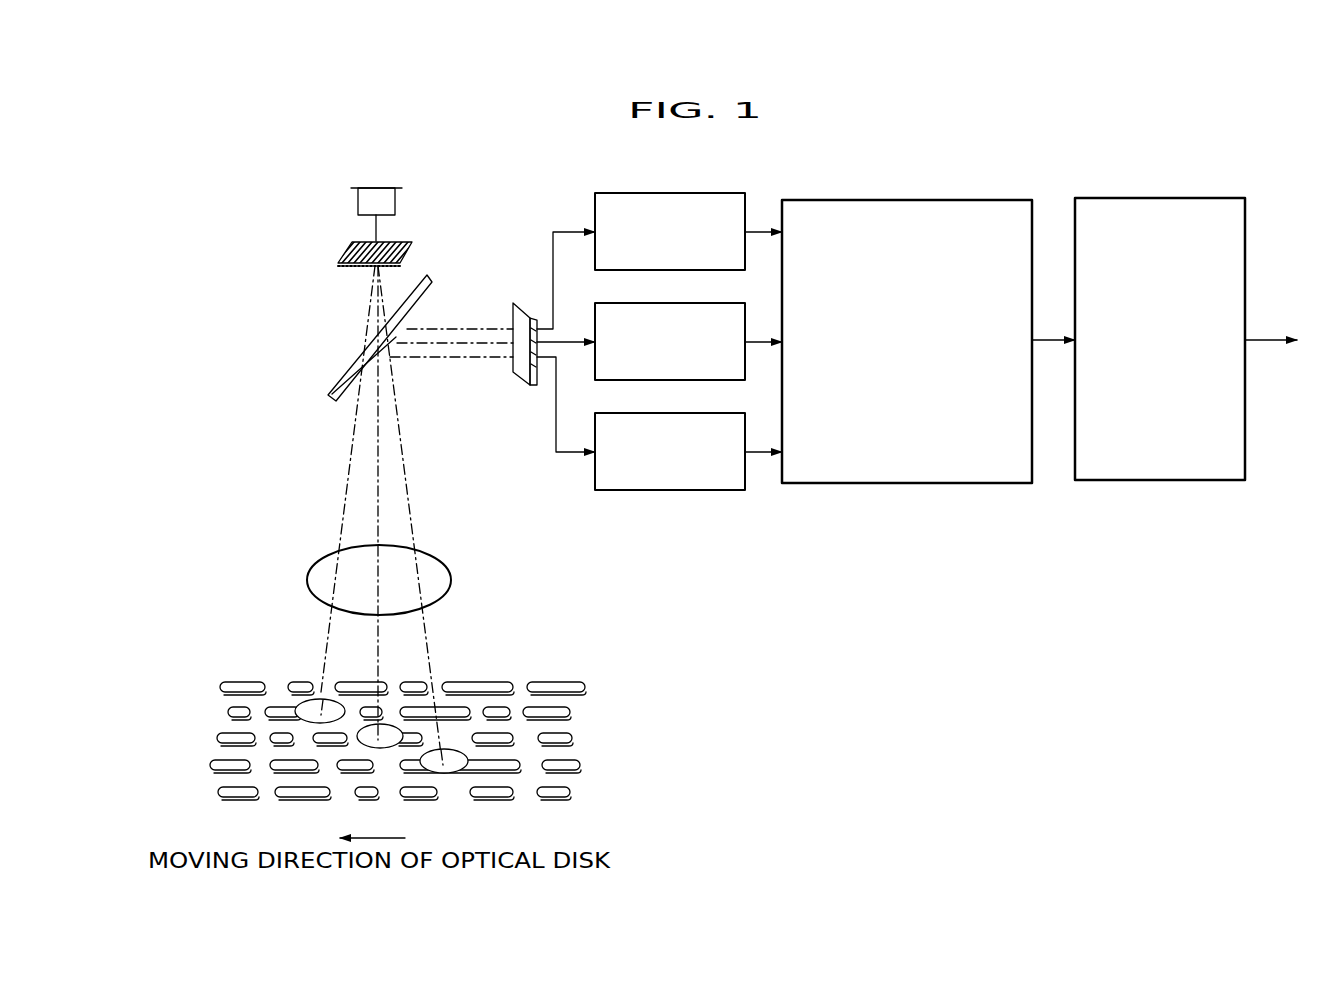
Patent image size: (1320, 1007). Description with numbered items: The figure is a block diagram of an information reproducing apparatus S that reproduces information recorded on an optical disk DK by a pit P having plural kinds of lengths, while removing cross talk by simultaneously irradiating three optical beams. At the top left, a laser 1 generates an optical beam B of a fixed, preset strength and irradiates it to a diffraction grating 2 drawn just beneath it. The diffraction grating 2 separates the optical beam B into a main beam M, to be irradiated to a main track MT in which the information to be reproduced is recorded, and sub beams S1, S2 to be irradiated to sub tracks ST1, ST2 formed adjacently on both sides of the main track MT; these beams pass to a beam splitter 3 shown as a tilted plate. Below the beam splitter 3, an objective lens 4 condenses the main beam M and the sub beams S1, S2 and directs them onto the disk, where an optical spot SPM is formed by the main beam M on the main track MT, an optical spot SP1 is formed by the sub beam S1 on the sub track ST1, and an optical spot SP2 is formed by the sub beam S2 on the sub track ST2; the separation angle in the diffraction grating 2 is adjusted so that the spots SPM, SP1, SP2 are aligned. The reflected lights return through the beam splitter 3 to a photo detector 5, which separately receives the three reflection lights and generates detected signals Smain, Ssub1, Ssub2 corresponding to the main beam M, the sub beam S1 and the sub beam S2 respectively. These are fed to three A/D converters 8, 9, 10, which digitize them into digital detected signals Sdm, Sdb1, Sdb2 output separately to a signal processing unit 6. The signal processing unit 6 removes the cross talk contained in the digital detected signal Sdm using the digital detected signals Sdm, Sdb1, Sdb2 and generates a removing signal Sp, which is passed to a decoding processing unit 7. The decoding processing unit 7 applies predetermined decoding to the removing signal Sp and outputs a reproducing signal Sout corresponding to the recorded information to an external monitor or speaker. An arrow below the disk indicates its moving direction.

The laser 1 is at (358, 202).
The optical beam B is at (373, 228).
The diffraction grating 2 is at (340, 262).
The beam splitter 3 is at (353, 357).
The objective lens 4 is at (452, 578).
The photo detector 5 is at (522, 378).
The signal processing unit 6 is at (907, 485).
The decoding processing unit 7 is at (1147, 482).
The A/D converter 8 is at (622, 193).
The A/D converter 9 is at (622, 303).
The A/D converter 10 is at (613, 492).
The main beam M is at (377, 490).
The sub beam S1 is at (413, 523).
The sub beam S2 is at (342, 522).
The optical spot SP1 is at (440, 773).
The optical spot SP2 is at (302, 705).
The optical spot SPM is at (390, 727).
The optical disk DK is at (218, 712).
The pit P is at (553, 680).
The sub track ST1 is at (590, 752).
The sub track ST2 is at (590, 698).
The main track MT is at (590, 725).
The detected signal Smain is at (547, 327).
The detected signal Ssub1 is at (553, 262).
The detected signal Ssub2 is at (556, 447).
The digital detected signal Sdb1 is at (758, 232).
The digital detected signal Sdm is at (758, 342).
The digital detected signal Sdb2 is at (758, 457).
The removing signal Sp is at (1045, 338).
The reproducing signal Sout is at (1267, 337).
The information reproducing apparatus S is at (864, 732).